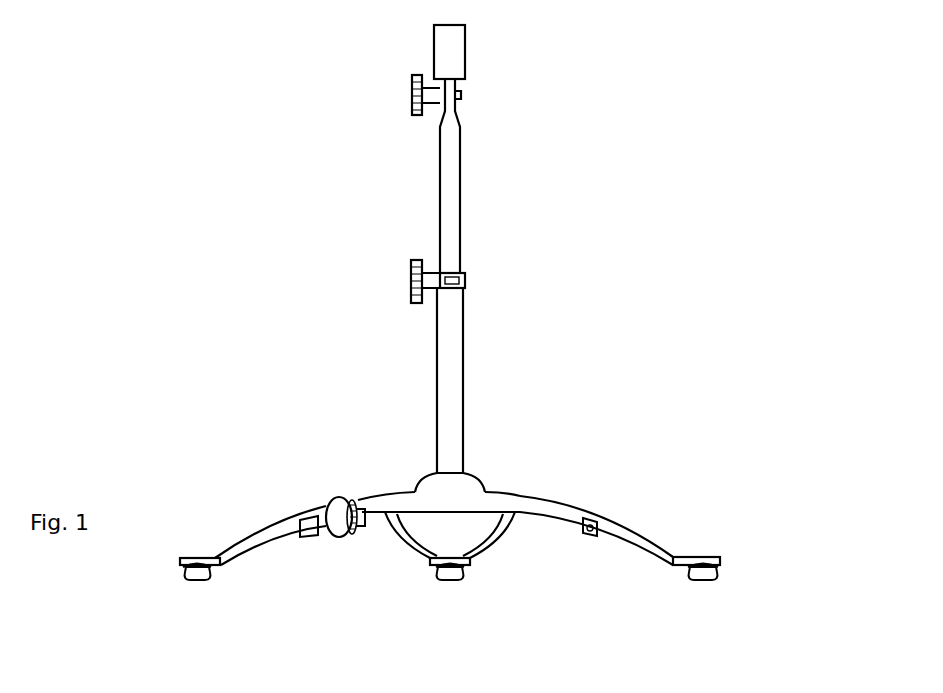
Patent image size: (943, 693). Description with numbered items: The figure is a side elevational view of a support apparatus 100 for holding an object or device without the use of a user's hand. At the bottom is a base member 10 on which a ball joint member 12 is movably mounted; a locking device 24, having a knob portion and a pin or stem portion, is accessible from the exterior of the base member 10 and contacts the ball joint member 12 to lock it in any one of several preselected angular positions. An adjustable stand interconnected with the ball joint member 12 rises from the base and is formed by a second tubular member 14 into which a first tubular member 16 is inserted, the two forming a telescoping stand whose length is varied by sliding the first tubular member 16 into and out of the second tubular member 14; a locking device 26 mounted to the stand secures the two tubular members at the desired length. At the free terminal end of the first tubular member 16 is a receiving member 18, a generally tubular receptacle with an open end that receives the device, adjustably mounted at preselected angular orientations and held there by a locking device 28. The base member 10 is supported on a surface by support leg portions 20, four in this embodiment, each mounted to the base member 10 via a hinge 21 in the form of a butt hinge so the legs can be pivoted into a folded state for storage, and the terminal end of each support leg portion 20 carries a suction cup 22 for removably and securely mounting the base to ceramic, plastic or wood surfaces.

The support apparatus 100 is at (722, 242).
The base member 10 is at (517, 502).
The ball joint member 12 is at (462, 478).
The second tubular member 14 is at (462, 346).
The first tubular member 16 is at (460, 170).
The receiving member 18 is at (465, 44).
The support leg portion 20 is at (243, 542).
The hinge 21 is at (315, 532).
The suction cup 22 is at (183, 583).
The locking device 24 is at (338, 505).
The locking device 26 is at (411, 281).
The locking device 28 is at (412, 103).